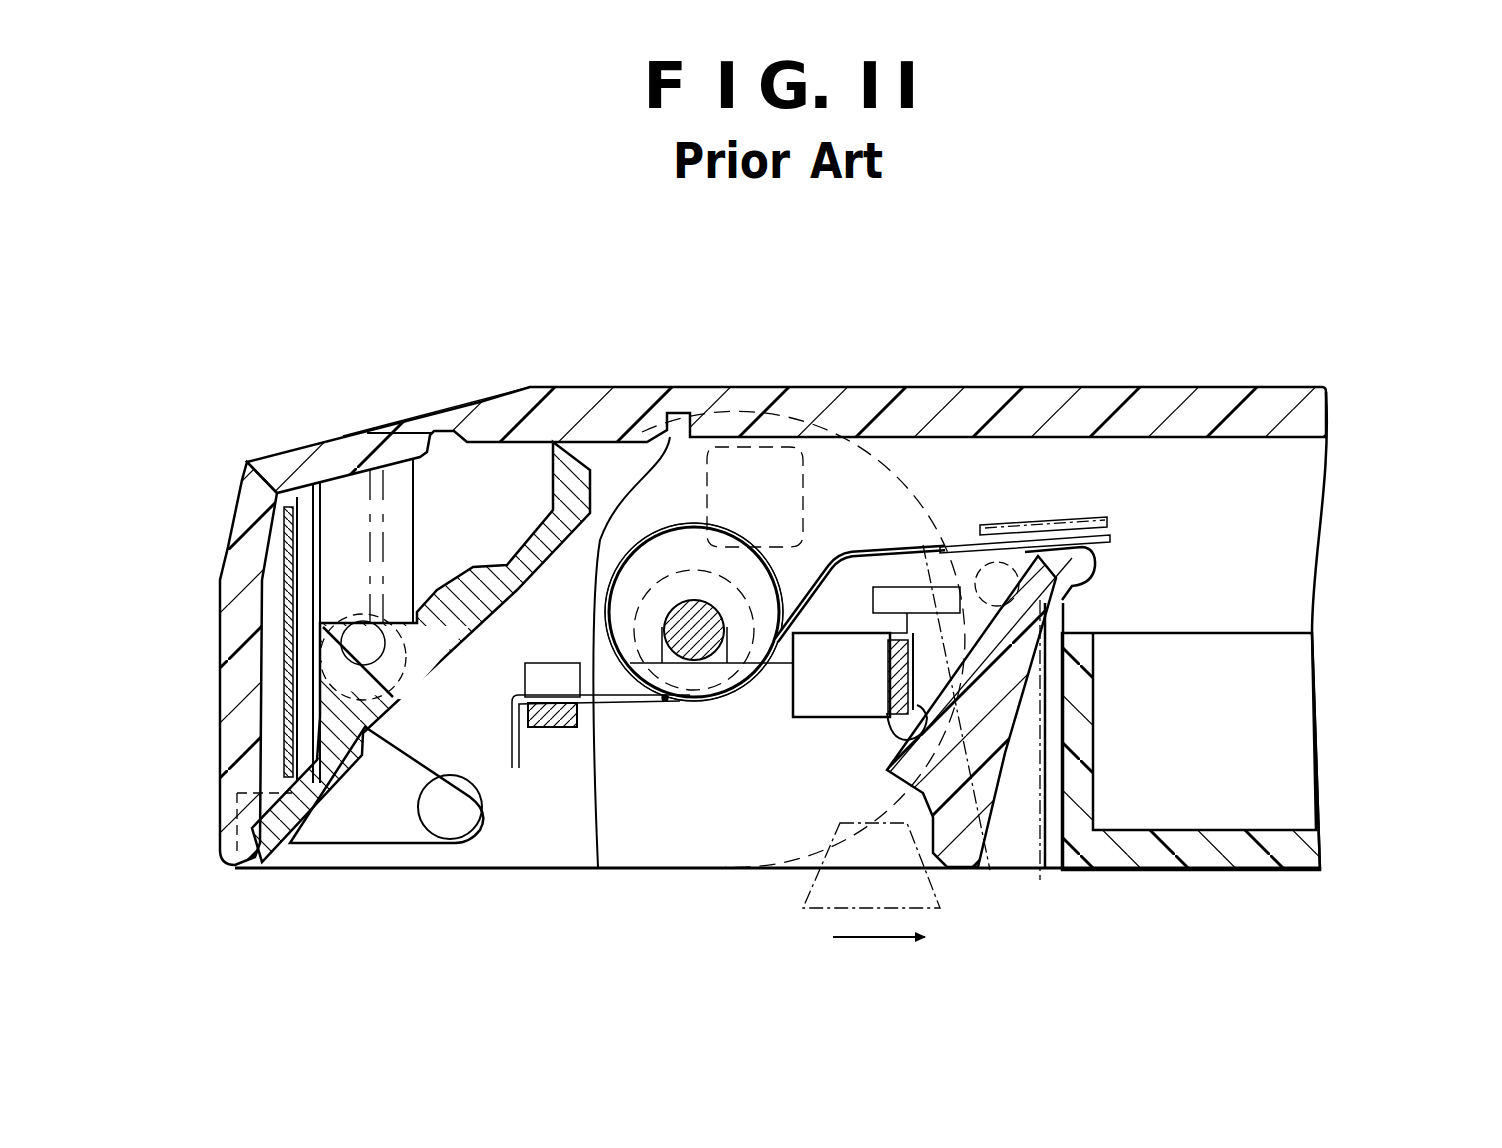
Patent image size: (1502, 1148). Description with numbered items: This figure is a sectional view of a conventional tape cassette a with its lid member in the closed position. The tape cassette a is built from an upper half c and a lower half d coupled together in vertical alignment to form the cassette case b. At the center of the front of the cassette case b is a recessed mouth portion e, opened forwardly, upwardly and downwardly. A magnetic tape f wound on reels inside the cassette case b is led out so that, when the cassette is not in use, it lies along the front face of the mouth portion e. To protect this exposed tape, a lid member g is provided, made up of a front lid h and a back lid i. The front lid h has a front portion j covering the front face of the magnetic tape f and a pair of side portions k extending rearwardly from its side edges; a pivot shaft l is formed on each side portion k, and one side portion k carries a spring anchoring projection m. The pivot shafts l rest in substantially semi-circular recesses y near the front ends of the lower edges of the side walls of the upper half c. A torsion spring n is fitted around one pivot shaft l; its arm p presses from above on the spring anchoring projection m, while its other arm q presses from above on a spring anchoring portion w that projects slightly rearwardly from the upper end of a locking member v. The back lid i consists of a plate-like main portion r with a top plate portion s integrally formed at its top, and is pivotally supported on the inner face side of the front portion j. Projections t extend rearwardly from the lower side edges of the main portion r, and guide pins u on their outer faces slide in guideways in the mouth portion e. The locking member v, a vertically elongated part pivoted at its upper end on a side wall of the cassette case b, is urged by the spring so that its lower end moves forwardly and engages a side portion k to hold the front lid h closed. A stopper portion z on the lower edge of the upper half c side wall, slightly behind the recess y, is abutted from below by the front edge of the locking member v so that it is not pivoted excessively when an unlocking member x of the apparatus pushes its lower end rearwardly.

The tape cassette a is at (412, 252).
The cassette case b is at (1448, 562).
The upper half c is at (1300, 596).
The lower half d is at (1300, 696).
The mouth portion e is at (528, 828).
The magnetic tape f is at (290, 686).
The lid member g is at (350, 338).
The front lid h is at (292, 447).
The back lid i is at (458, 405).
The front portion j is at (232, 604).
The side portions k is at (876, 470).
The pivot shaft l is at (700, 665).
The spring anchoring projection m is at (548, 702).
The torsion spring n is at (735, 680).
The arm p is at (602, 704).
The arm q is at (948, 547).
The main portion r is at (430, 650).
The top plate portion s is at (588, 412).
The projections t is at (342, 830).
The guide pins u is at (412, 822).
The locking member v is at (984, 866).
The spring anchoring portion w is at (1080, 573).
The unlocking member x is at (800, 896).
The semi-circular recesses y is at (716, 620).
The stopper portion z is at (860, 686).